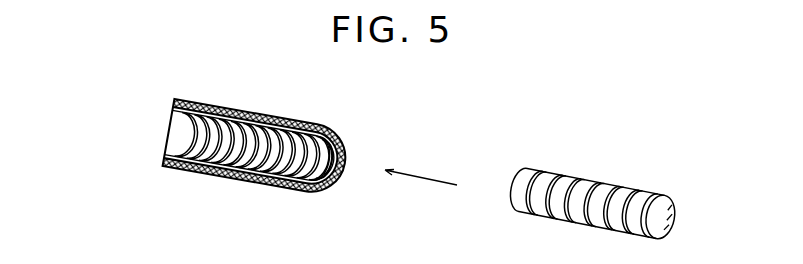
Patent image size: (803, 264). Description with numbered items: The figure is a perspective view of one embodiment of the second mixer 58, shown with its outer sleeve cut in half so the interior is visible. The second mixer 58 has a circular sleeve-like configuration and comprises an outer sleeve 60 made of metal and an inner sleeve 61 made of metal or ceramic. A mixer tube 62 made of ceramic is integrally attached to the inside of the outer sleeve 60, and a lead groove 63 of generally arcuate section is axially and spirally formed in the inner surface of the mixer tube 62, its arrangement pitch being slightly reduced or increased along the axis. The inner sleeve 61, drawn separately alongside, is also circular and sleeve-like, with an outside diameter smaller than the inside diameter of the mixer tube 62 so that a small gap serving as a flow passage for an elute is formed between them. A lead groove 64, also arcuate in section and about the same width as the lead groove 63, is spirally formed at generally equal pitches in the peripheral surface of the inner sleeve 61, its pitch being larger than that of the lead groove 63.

The second mixer 58 is at (449, 135).
The outer sleeve 60 is at (265, 108).
The inner sleeve 61 is at (601, 180).
The mixer tube 62 is at (340, 158).
The lead groove 63 is at (280, 148).
The lead groove 64 is at (550, 170).